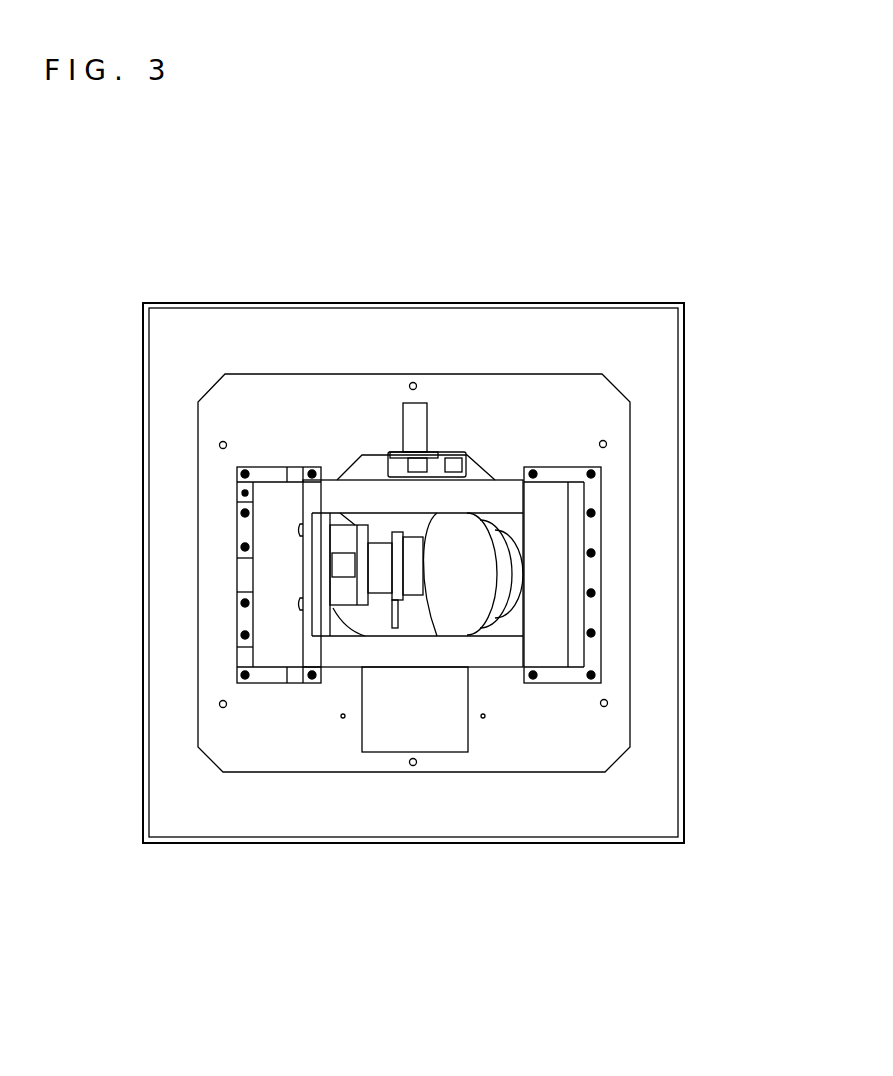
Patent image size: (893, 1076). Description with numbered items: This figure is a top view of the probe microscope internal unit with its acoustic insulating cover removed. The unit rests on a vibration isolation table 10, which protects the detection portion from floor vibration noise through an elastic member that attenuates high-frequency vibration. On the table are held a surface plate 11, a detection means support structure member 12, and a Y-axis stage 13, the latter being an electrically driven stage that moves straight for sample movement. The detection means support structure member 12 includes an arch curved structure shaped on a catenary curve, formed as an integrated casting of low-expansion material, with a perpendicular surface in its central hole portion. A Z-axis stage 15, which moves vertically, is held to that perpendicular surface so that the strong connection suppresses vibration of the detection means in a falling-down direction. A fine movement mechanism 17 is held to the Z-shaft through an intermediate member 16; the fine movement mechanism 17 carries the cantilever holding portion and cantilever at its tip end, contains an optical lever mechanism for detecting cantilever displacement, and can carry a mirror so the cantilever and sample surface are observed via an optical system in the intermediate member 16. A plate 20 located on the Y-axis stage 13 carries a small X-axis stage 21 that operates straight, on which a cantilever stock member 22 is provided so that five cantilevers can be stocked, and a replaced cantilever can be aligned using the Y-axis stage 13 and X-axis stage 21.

The vibration isolation table 10 is at (406, 815).
The surface plate 11 is at (606, 692).
The detection means support structure member 12 is at (548, 567).
The Y-axis stage 13 is at (437, 708).
The Z-axis stage 15 is at (342, 540).
The intermediate member 16 is at (385, 607).
The fine movement mechanism 17 is at (420, 557).
The plate 20 is at (475, 472).
The X-axis stage 21 is at (440, 468).
The cantilever stock member 22 is at (418, 458).